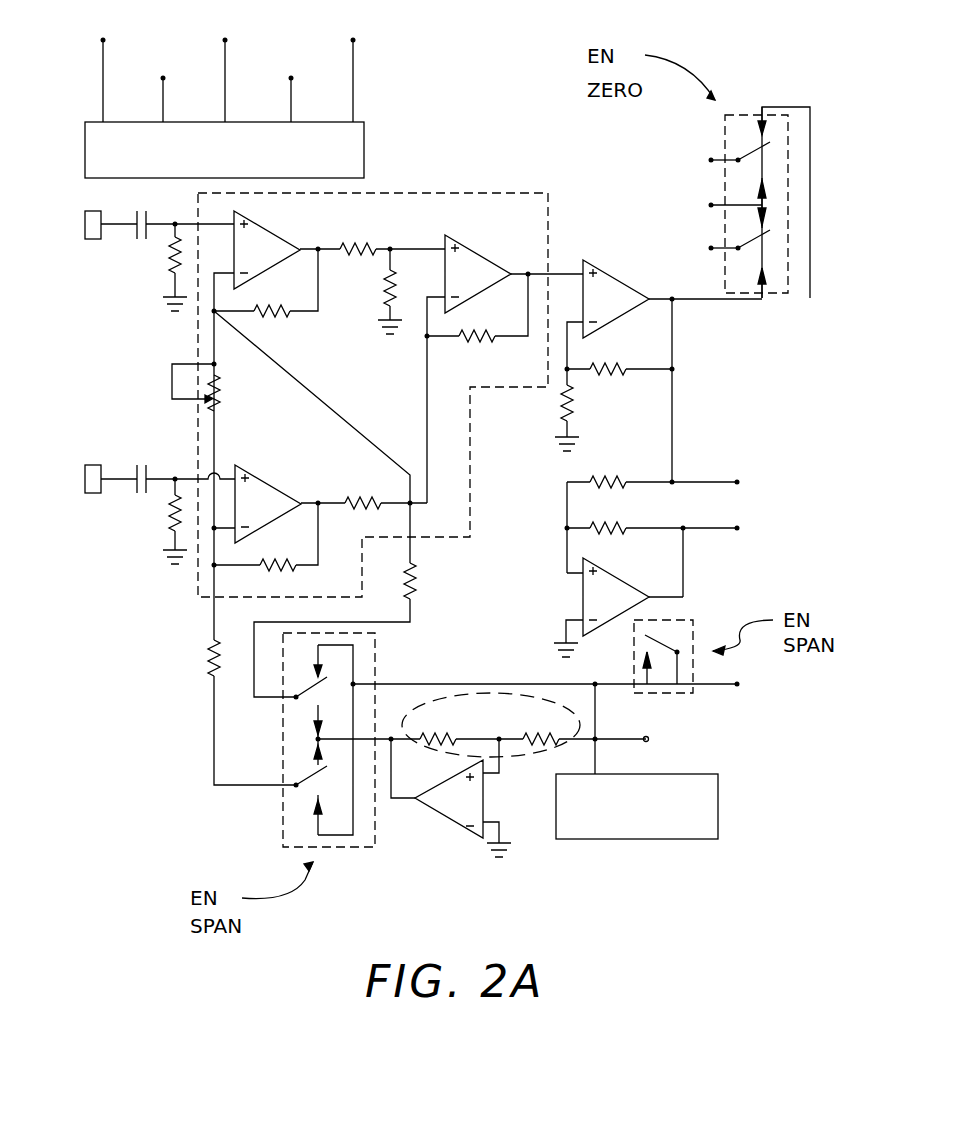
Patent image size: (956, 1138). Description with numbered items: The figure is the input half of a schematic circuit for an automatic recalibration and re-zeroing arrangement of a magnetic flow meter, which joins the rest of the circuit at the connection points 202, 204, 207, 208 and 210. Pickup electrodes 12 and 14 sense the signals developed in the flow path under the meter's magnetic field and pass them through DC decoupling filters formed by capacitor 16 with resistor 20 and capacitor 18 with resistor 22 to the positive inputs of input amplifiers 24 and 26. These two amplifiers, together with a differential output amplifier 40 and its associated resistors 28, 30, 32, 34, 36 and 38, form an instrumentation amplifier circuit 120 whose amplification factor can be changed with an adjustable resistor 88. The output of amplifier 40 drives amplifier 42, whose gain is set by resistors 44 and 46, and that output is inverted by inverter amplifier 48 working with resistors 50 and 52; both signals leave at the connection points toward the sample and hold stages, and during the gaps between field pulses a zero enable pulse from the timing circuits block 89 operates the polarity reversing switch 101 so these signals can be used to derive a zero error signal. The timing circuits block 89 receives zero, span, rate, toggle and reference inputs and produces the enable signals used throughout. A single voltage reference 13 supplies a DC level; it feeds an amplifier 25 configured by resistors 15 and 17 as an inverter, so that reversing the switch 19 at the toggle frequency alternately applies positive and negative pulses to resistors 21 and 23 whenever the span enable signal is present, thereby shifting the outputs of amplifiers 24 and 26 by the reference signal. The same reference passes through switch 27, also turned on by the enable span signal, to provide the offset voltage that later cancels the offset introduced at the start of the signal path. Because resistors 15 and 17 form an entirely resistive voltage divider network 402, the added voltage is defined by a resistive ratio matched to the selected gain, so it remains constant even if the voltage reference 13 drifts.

The pickup electrode 12 is at (86, 220).
The pickup electrode 14 is at (88, 470).
The capacitor 16 is at (137, 240).
The capacitor 18 is at (145, 465).
The resistor 20 is at (175, 265).
The resistor 22 is at (173, 517).
The input amplifier 24 is at (262, 226).
The input amplifier 26 is at (268, 480).
The resistor 28 is at (278, 316).
The resistor 30 is at (262, 570).
The resistor 32 is at (385, 242).
The resistor 34 is at (383, 290).
The resistor 36 is at (357, 500).
The resistor 38 is at (485, 338).
The differential output amplifier 40 is at (478, 252).
The amplifier 42 is at (630, 312).
The resistor 44 is at (600, 372).
The resistor 46 is at (565, 401).
The inverter amplifier 48 is at (583, 590).
The resistor 50 is at (615, 530).
The resistor 52 is at (617, 482).
The adjustable resistor 88 is at (172, 388).
The timing circuits block 89 is at (365, 145).
The polarity reversing switch 101 is at (745, 115).
The instrumentation amplifier circuit 120 is at (470, 462).
The switch 19 is at (375, 657).
The resistor 21 is at (212, 658).
The resistor 23 is at (417, 580).
The resistor 17 is at (438, 738).
The resistor 15 is at (528, 736).
The amplifier 25 is at (450, 820).
The voltage reference 13 is at (637, 839).
The switch 27 is at (697, 620).
The voltage divider network 402 is at (578, 718).
The connection point 202 is at (689, 249).
The connection point 204 is at (689, 159).
The connection point 208 is at (718, 366).
The connection point 207 is at (768, 483).
The connection point 210 is at (595, 685).